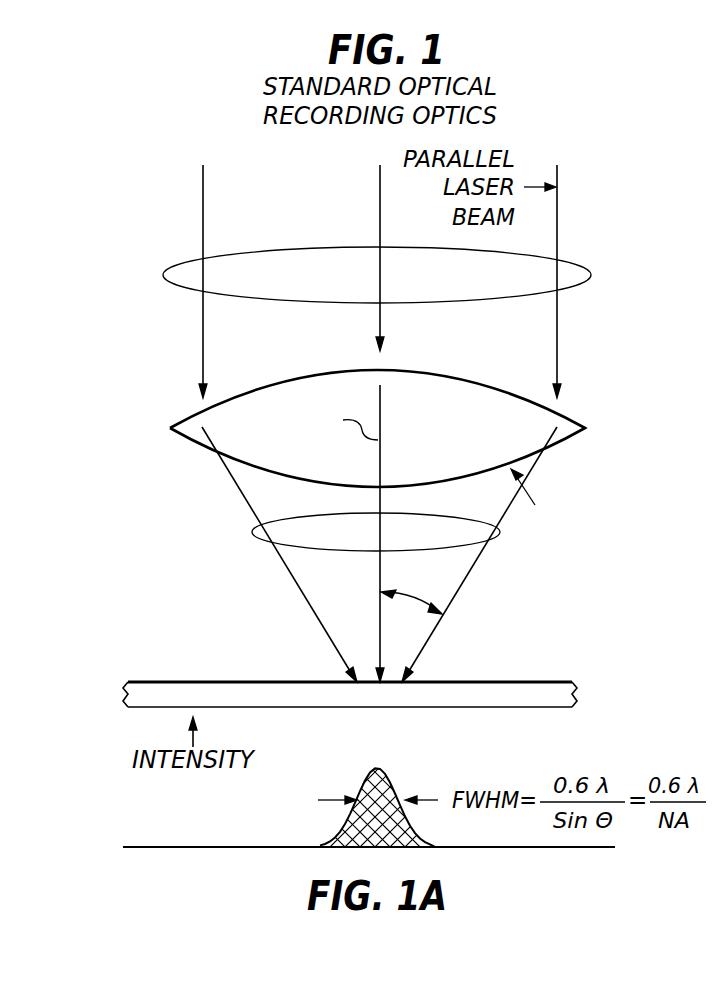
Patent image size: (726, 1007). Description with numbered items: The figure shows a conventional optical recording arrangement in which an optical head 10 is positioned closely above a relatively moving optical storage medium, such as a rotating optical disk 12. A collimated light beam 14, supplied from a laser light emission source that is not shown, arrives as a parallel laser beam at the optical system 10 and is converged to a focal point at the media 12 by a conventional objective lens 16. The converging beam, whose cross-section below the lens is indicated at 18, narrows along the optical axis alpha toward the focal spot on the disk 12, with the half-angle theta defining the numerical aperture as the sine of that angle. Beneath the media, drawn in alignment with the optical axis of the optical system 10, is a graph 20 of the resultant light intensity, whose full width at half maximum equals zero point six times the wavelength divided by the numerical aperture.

In FIG. 1, the optical head 10 is at (588, 381).
In FIG. 1, the optical disk 12 is at (578, 690).
In FIG. 1, the collimated light beam 14 is at (185, 262).
In FIG. 1, the objective lens 16 is at (190, 441).
In FIG. 1, the converging beam cross-section 18 is at (250, 533).
In FIG. 1A, the graph 20 is at (352, 776).